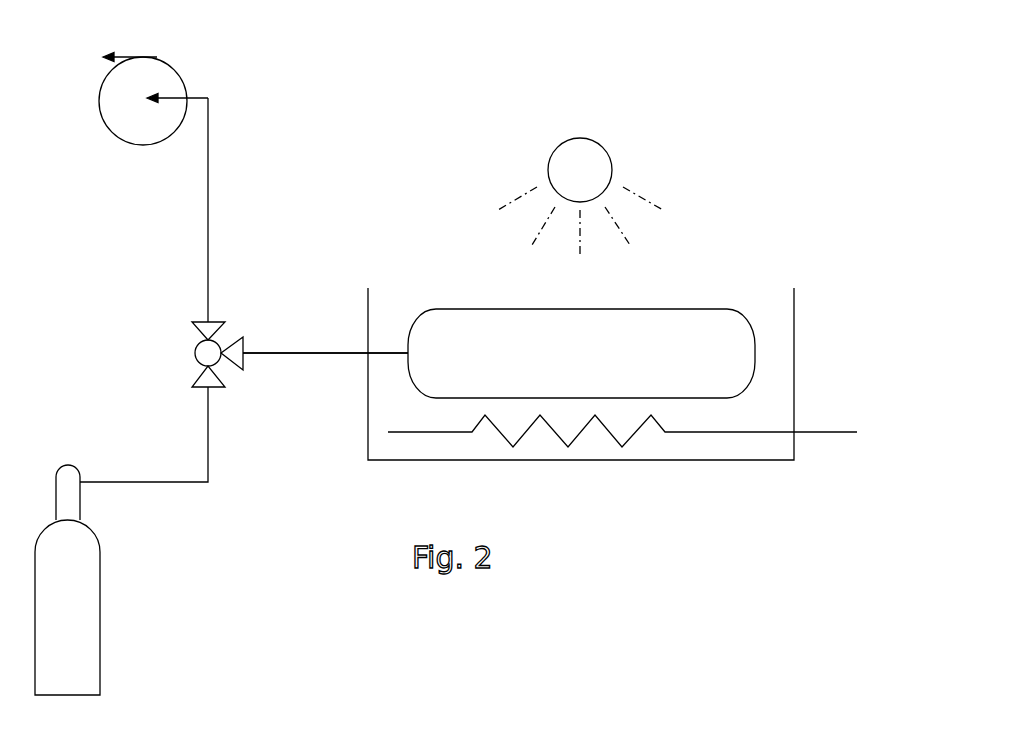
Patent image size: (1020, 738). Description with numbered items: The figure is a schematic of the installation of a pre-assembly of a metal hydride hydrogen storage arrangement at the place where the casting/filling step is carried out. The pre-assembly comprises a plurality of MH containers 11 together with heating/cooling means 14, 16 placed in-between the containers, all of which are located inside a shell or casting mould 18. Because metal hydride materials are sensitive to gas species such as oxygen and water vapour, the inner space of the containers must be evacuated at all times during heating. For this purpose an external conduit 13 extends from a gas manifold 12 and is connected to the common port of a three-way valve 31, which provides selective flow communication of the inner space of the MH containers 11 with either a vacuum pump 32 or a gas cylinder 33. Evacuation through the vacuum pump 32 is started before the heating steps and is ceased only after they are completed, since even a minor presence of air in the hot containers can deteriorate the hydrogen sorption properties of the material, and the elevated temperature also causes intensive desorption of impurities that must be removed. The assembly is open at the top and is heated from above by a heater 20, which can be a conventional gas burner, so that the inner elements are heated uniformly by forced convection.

The MH containers 11 is at (593, 368).
The gas manifold 12 is at (325, 300).
The external conduit 13 is at (292, 353).
The heating/cooling means 14 is at (636, 467).
The heating/cooling means 16 is at (825, 432).
The shell or casting mould 18 is at (794, 332).
The heater 20 is at (632, 125).
The 3-way valve 31 is at (195, 359).
The vacuum pump 32 is at (172, 63).
The gas cylinder 33 is at (100, 605).